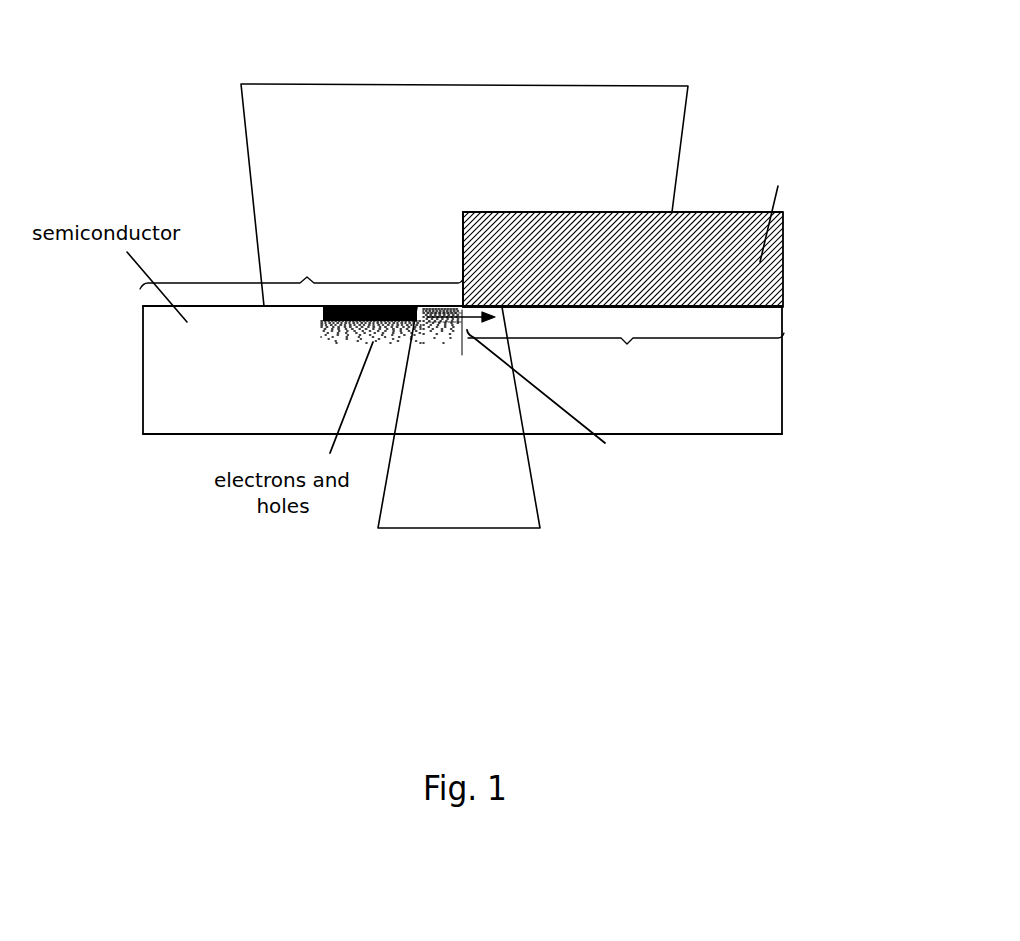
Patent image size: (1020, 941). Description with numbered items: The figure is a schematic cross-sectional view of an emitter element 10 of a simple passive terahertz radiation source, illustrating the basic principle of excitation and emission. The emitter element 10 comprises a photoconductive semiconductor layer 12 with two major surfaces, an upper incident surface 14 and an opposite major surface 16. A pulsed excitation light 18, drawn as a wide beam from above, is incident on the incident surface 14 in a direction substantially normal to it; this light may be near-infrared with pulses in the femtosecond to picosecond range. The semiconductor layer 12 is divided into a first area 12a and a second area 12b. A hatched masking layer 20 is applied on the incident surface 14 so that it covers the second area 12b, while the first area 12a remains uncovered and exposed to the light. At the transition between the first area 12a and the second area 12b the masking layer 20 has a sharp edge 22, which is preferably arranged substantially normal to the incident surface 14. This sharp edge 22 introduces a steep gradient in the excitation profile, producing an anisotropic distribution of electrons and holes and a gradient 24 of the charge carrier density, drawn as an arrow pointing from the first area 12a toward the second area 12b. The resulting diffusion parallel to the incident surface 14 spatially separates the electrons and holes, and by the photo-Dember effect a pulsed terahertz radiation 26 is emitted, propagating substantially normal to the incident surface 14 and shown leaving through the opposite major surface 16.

The emitter element 10 is at (165, 109).
The semiconductor layer 12 is at (185, 370).
The first area 12a is at (301, 298).
The second area 12b is at (626, 354).
The incident surface 14 is at (233, 305).
The major surface 16 is at (178, 434).
The pulsed excitation light 18 is at (665, 84).
The masking layer 20 is at (775, 287).
The sharp edge 22 is at (463, 232).
The gradient of the charge carrier density 24 is at (556, 394).
The pulsed terahertz radiation 26 is at (533, 490).